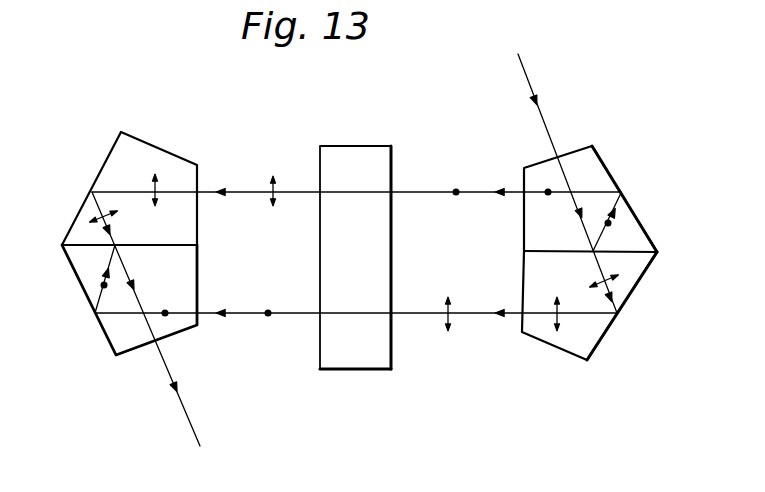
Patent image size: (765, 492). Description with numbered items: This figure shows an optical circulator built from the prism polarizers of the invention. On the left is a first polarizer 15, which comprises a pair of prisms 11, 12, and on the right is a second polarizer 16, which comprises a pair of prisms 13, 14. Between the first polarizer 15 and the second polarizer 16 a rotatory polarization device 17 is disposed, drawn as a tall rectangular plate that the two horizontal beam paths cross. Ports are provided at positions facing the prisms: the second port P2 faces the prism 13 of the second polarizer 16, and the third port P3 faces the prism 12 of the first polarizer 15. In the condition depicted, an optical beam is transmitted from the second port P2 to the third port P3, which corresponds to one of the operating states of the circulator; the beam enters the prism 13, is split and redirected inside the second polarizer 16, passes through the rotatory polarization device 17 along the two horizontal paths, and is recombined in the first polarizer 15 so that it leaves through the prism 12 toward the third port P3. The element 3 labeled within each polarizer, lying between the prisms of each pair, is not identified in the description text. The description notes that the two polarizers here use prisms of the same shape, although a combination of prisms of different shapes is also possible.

The polarizing beam-splitting interface 3 is at (148, 245).
The prism 11 is at (139, 149).
The prism 12 is at (87, 276).
The prism 13 is at (601, 158).
The prism 14 is at (643, 283).
The first polarizer 15 is at (111, 233).
The second polarizer 16 is at (617, 246).
The rotatory polarization device 17 is at (351, 371).
The second port P2 is at (567, 183).
The third port P3 is at (160, 319).